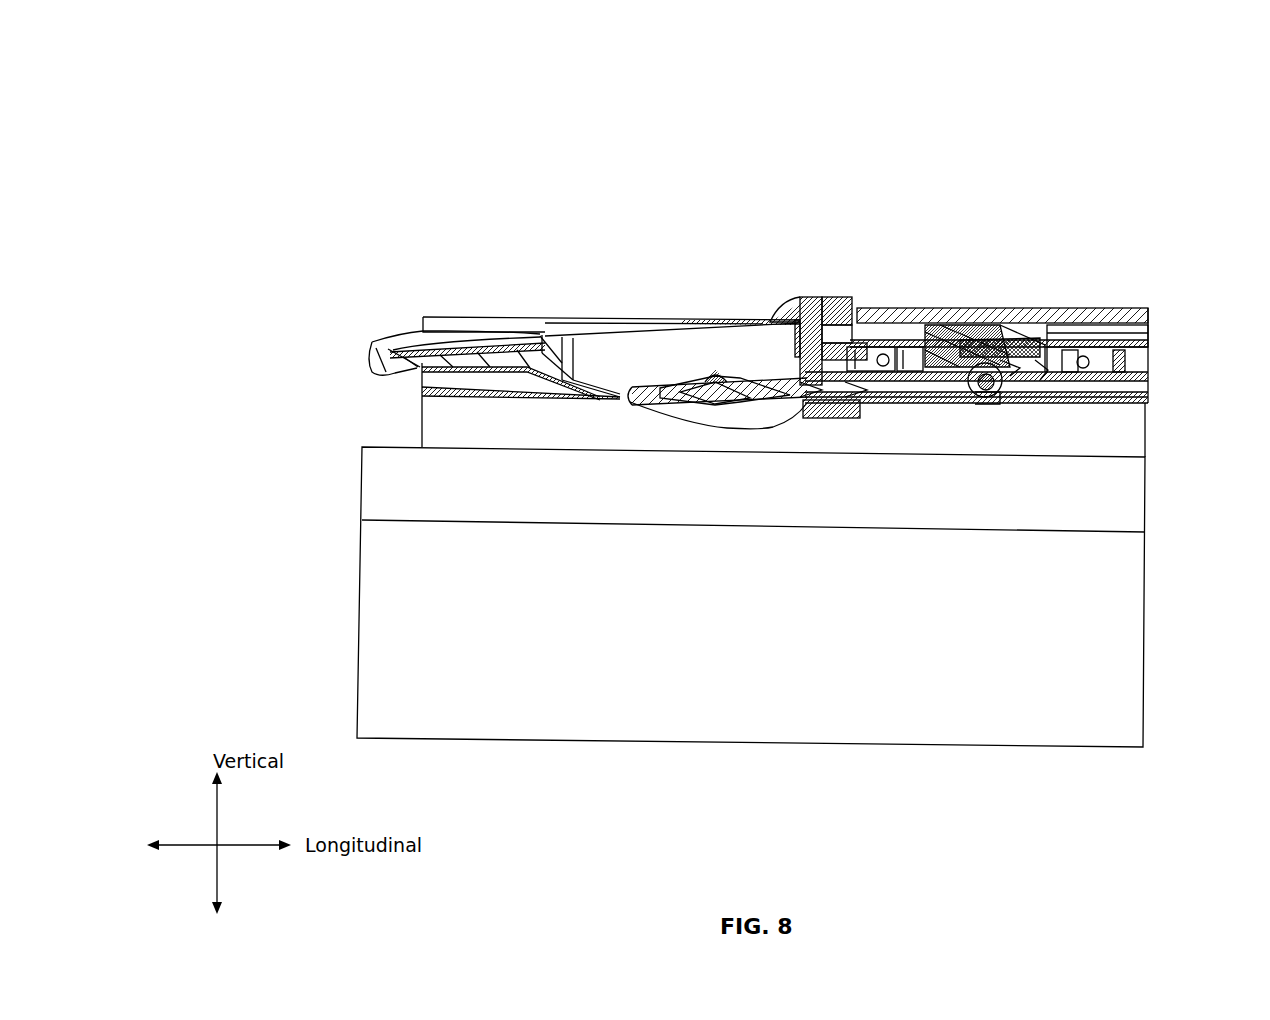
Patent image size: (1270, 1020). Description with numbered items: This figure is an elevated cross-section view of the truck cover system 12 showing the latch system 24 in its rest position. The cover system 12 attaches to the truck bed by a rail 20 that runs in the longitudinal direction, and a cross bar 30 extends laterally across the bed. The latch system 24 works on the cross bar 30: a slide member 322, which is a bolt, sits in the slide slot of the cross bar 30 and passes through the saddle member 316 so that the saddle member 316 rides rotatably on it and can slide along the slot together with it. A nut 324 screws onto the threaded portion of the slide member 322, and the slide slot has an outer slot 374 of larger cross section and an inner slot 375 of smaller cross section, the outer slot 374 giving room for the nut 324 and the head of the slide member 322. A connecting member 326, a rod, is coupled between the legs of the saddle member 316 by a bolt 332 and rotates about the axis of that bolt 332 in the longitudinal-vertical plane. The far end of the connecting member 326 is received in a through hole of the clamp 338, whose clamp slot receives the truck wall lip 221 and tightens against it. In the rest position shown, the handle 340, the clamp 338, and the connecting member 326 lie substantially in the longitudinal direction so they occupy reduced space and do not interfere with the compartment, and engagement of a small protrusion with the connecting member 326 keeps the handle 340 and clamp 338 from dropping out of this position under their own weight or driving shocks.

The truck cover system 12 is at (704, 134).
The latch system 24 is at (970, 108).
The rail 20 is at (548, 323).
The cross bar 30 is at (1082, 320).
The truck wall lip 221 is at (425, 502).
The saddle member 316 is at (985, 325).
The slide member 322 is at (1013, 320).
The nut 324 is at (925, 325).
The connecting member 326 is at (886, 325).
The bolt 332 is at (990, 400).
The clamp 338 is at (815, 298).
The handle 340 is at (673, 340).
The outer slot 374 is at (1043, 367).
The inner slot 375 is at (1013, 360).